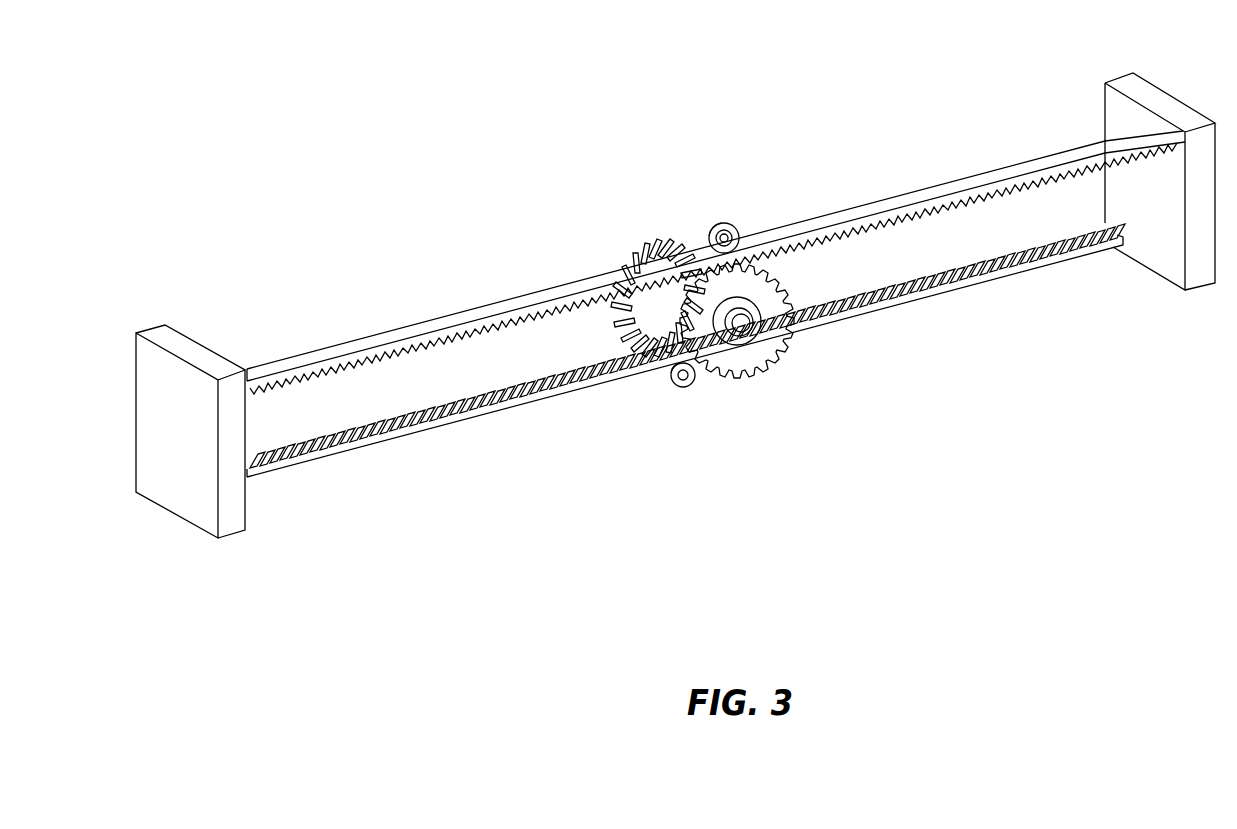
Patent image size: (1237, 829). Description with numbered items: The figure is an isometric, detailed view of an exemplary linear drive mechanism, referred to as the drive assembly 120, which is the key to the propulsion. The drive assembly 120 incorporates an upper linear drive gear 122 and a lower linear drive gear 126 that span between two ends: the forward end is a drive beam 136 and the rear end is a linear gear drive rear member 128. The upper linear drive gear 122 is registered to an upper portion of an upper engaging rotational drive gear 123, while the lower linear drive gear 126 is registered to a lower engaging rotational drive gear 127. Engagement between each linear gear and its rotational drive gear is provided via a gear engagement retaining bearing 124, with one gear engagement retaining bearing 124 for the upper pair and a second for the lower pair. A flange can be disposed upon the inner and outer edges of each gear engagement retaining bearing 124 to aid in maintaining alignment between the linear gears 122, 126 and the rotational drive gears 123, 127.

The drive assembly 120 is at (980, 113).
The upper linear drive gear 122 is at (405, 330).
The upper engaging rotational drive gear 123 is at (763, 346).
The gear engagement retaining bearing 124 is at (745, 230).
The lower linear drive gear 126 is at (441, 423).
The lower engaging rotational drive gear 127 is at (672, 236).
The linear gear drive rear member 128 is at (187, 350).
The drive beam 136 is at (1157, 102).